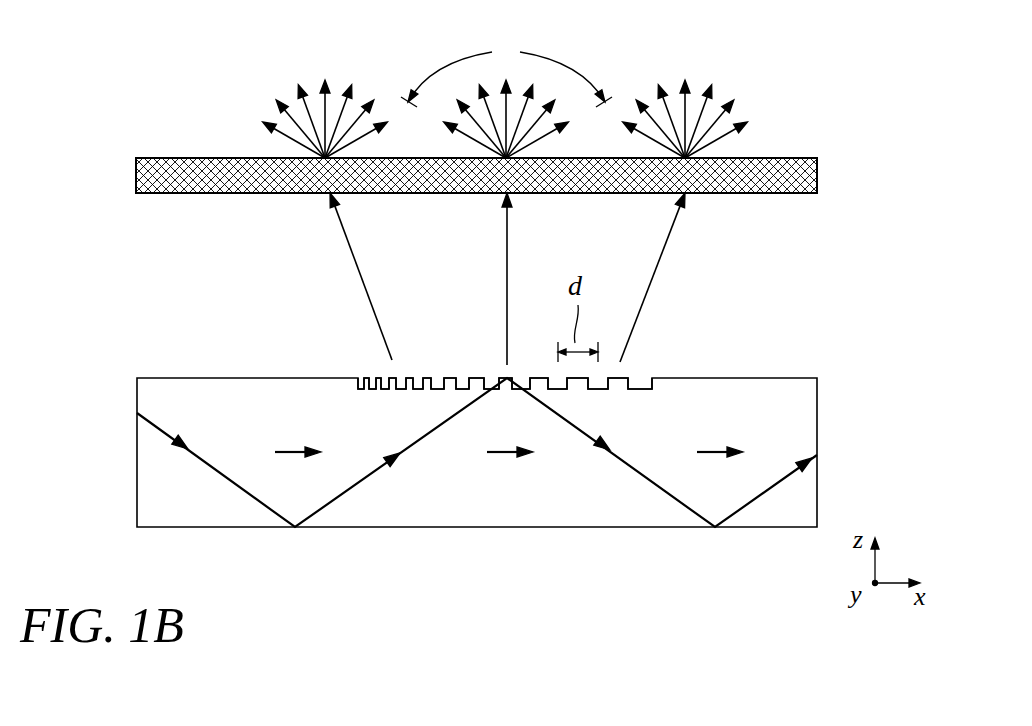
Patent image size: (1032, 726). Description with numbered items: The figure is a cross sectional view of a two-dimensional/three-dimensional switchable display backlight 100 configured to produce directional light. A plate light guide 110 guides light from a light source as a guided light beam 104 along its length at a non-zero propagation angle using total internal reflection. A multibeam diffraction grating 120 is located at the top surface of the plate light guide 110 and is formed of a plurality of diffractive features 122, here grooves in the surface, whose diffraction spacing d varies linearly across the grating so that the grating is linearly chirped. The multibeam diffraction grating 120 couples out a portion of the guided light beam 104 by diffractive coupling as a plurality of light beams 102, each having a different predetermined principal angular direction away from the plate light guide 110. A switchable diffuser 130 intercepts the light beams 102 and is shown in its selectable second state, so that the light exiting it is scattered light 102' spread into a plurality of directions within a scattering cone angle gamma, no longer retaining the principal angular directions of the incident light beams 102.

The 2D/3D switchable display backlight 100 is at (788, 69).
The light beams 102 is at (582, 168).
The scattered light 102' is at (271, 103).
The guided light beam 104 is at (611, 473).
The plate light guide 110 is at (817, 412).
The multibeam diffraction grating 120 is at (344, 352).
The diffractive features 122 is at (463, 353).
The switchable diffuser 130 is at (817, 175).